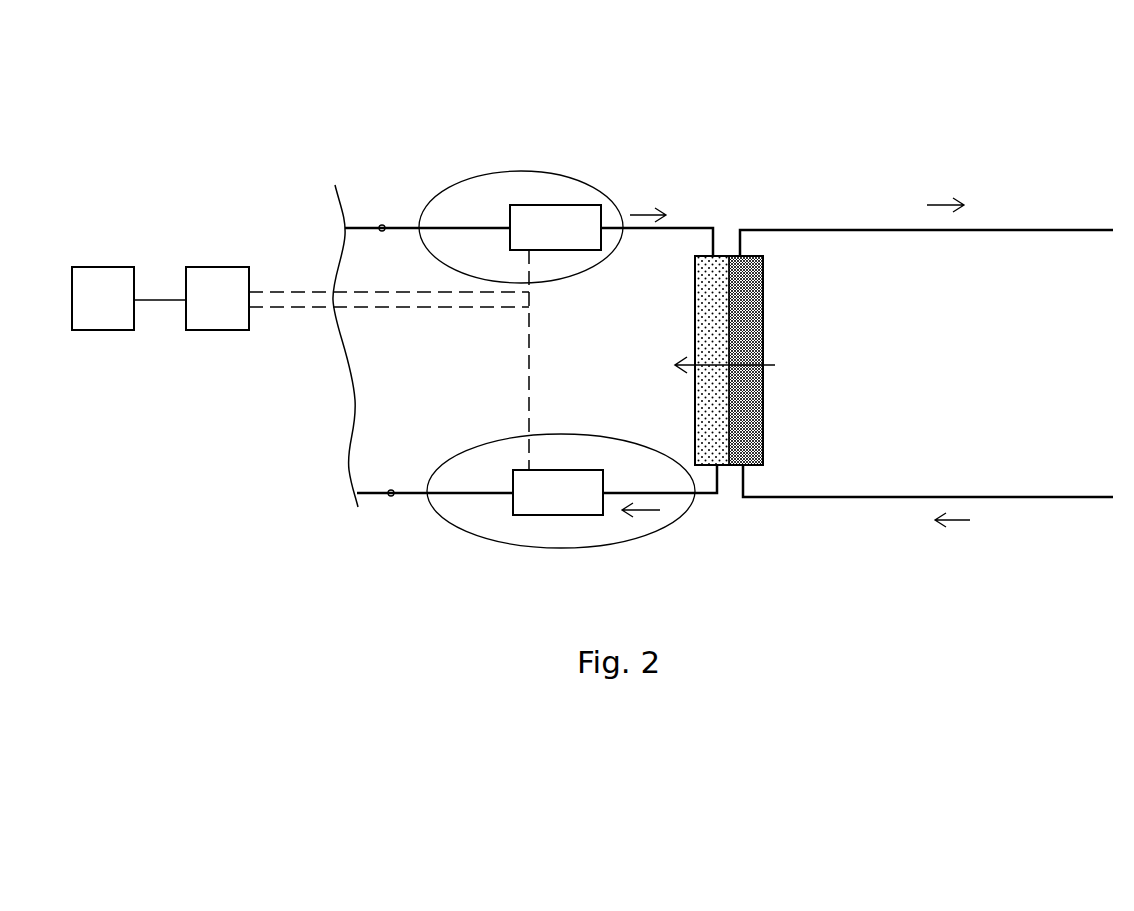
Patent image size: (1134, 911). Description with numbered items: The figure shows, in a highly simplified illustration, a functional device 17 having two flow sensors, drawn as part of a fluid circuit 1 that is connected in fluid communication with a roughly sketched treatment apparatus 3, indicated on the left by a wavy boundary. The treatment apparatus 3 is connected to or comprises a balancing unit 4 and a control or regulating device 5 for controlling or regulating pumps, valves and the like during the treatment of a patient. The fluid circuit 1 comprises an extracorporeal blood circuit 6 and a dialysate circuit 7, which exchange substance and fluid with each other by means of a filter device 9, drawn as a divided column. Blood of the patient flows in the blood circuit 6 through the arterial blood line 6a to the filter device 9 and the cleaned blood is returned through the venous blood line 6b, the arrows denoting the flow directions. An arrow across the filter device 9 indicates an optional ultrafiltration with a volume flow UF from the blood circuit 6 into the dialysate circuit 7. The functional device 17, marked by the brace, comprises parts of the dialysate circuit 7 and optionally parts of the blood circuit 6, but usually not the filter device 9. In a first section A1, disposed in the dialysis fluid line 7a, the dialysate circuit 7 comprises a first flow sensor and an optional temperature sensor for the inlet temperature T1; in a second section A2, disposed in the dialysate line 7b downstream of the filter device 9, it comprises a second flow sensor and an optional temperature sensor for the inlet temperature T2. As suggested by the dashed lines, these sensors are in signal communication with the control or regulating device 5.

The fluid circuit 1 is at (403, 155).
The treatment apparatus 3 is at (316, 346).
The balancing unit 4 is at (103, 298).
The control or regulating device 5 is at (191, 298).
The extracorporeal blood circuit 6 is at (901, 371).
The arterial blood line 6a is at (1028, 498).
The venous blood line 6b is at (1020, 229).
The dialysate circuit 7 is at (603, 338).
The dialysis fluid line 7a is at (680, 228).
The dialysate line 7b is at (408, 494).
The filter device 9 is at (729, 256).
The functional device 17 is at (947, 80).
The first section A1 is at (538, 196).
The second section A2 is at (561, 512).
The temperature of fluid entering the first section T1 is at (462, 211).
The temperature of fluid entering the second section T2 is at (642, 476).
The ultrafiltration rate UF is at (741, 365).